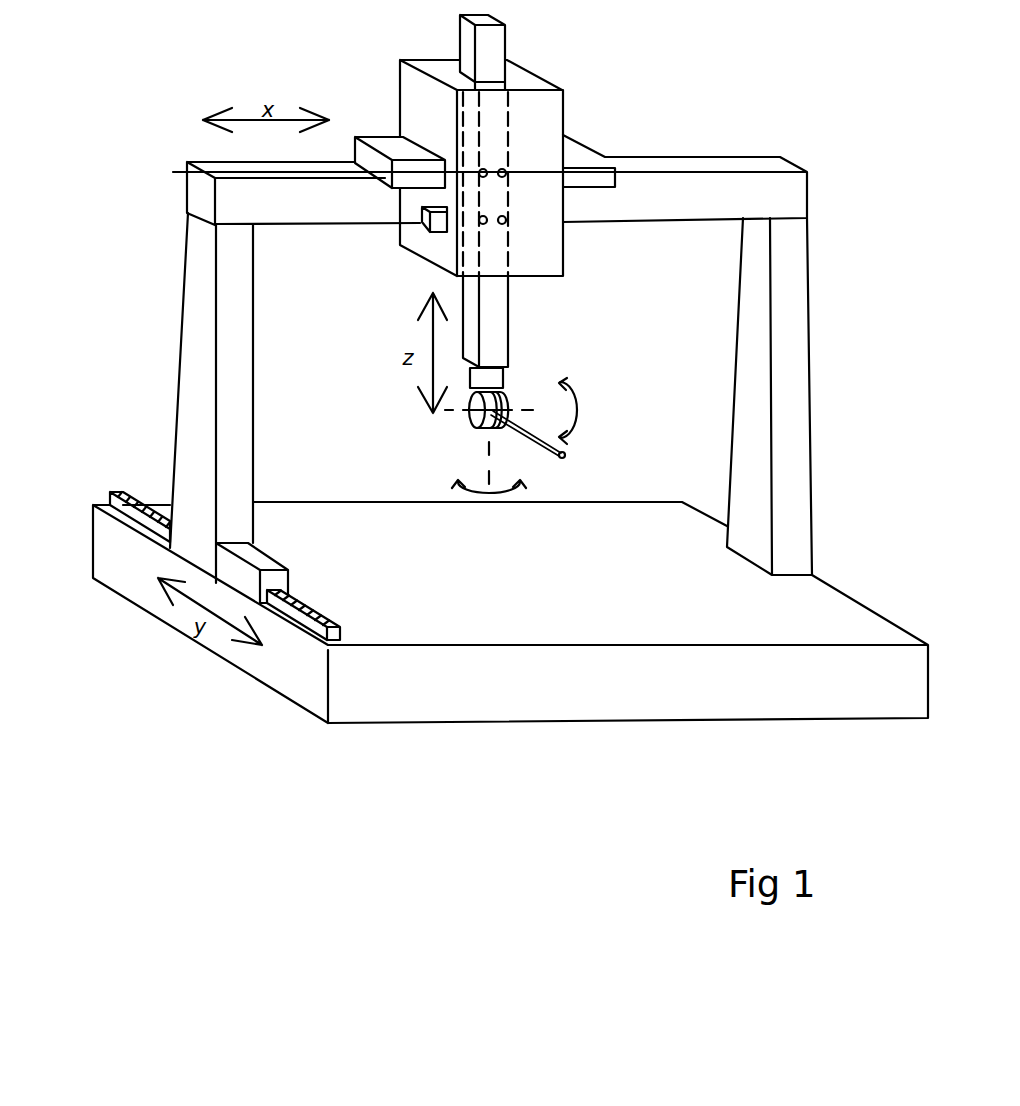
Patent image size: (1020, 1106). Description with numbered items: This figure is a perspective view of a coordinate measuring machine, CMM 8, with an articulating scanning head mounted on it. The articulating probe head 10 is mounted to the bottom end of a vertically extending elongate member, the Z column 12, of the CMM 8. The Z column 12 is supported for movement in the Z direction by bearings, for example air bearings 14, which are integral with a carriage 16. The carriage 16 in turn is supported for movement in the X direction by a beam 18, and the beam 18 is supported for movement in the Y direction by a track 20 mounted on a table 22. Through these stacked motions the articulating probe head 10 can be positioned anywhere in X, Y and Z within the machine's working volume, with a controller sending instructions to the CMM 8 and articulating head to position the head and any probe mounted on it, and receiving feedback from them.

The coordinate measuring machine 8 is at (735, 90).
The articulating probe head 10 is at (441, 427).
The Z column 12 is at (490, 323).
The air bearings 14 is at (508, 220).
The carriage 16 is at (548, 130).
The beam 18 is at (733, 187).
The track 20 is at (110, 503).
The table 22 is at (533, 687).